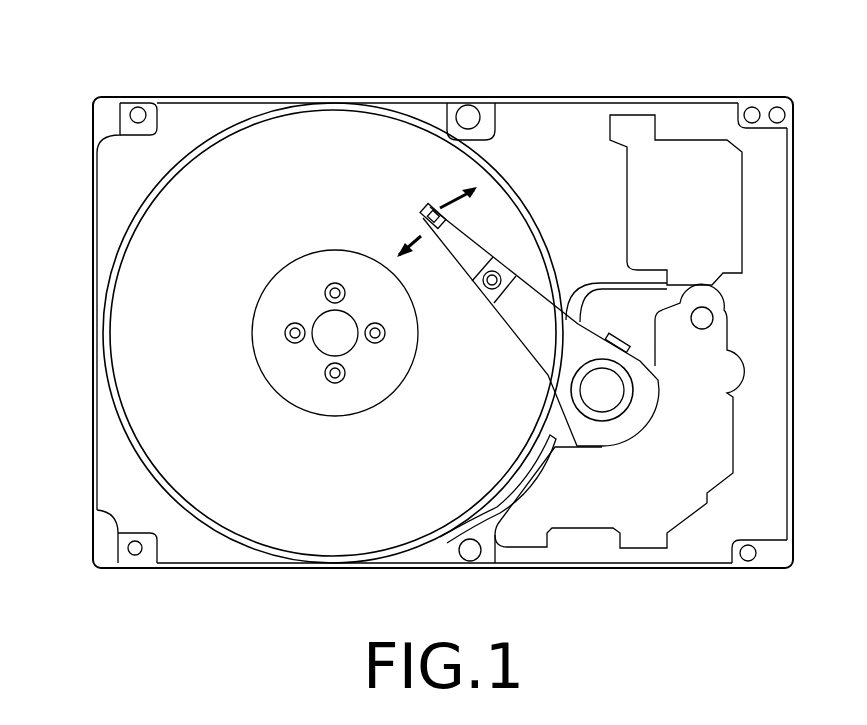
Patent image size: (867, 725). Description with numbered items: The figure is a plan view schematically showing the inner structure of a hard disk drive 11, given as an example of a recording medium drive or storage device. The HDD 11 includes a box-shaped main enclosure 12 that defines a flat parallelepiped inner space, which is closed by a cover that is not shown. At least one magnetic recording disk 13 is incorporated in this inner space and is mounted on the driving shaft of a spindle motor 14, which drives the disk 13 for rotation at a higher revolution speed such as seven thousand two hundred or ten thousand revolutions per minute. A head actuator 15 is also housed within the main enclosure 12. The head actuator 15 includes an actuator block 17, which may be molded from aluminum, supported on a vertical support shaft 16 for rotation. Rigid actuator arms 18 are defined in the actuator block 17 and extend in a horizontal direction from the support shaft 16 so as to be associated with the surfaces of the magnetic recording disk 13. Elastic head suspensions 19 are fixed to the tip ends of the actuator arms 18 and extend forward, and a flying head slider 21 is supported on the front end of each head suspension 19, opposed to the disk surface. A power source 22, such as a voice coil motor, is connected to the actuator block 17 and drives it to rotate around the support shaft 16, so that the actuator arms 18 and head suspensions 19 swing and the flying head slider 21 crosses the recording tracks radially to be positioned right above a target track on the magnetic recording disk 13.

The hard disk drive 11 is at (336, 96).
The main enclosure 12 is at (96, 180).
The magnetic recording disk 13 is at (118, 252).
The spindle motor 14 is at (325, 350).
The head actuator 15 is at (534, 282).
The support shaft 16 is at (618, 403).
The actuator block 17 is at (558, 418).
The actuator arm 18 is at (522, 337).
The head suspension 19 is at (465, 265).
The flying head slider 21 is at (423, 215).
The power source 22 is at (607, 443).